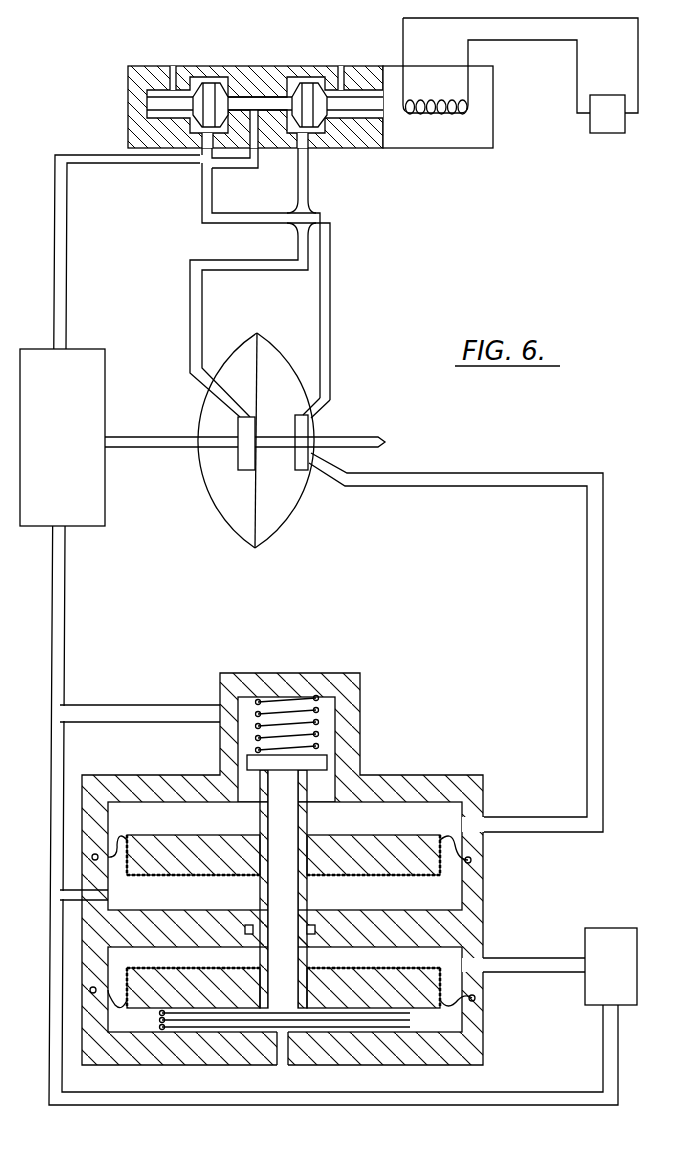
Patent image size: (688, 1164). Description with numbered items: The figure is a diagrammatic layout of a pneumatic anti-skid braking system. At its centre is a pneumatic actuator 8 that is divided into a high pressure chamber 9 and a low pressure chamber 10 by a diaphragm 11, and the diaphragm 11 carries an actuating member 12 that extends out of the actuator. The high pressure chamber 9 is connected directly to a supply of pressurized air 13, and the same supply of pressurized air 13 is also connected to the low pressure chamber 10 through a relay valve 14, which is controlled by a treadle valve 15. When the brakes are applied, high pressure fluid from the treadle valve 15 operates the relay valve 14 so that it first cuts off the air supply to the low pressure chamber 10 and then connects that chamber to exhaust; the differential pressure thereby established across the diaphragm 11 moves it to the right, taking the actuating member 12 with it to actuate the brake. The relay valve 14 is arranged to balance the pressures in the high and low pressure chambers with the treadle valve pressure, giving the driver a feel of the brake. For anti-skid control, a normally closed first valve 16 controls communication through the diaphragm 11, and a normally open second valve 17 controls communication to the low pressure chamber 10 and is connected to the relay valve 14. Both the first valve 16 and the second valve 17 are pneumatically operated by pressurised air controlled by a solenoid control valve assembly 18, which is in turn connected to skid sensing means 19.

The pneumatic actuator 8 is at (262, 447).
The high pressure chamber 9 is at (223, 495).
The low pressure chamber 10 is at (267, 518).
The diaphragm 11 is at (252, 525).
The actuating member 12 is at (362, 438).
The supply of pressurized air 13 is at (74, 451).
The relay valve 14 is at (483, 884).
The treadle valve 15 is at (624, 986).
The first valve 16 is at (238, 428).
The second valve 17 is at (304, 430).
The solenoid control valve assembly 18 is at (210, 62).
The skid sensing means 19 is at (606, 120).